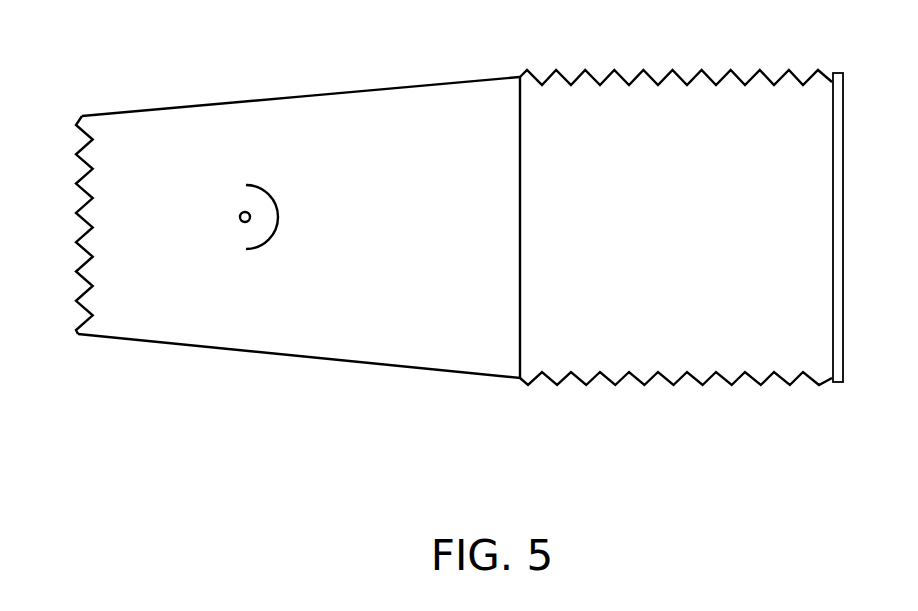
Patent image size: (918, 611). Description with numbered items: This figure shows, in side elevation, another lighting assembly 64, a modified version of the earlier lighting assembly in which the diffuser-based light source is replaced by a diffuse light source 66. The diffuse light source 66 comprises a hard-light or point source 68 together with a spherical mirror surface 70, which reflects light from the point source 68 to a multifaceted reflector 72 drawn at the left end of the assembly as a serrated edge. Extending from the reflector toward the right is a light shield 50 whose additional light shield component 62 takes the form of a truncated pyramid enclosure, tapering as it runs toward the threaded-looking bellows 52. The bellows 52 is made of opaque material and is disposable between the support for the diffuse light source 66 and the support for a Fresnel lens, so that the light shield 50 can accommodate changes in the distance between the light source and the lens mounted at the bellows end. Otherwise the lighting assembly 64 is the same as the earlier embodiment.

The light shield 50 is at (267, 235).
The bellows 52 is at (674, 70).
The additional light shield component 62 is at (403, 87).
The lighting assembly 64 is at (620, 442).
The diffuse light source 66 is at (213, 115).
The hard-light or point source 68 is at (240, 220).
The spherical mirror surface 70 is at (271, 242).
The multifaceted reflector 72 is at (76, 242).